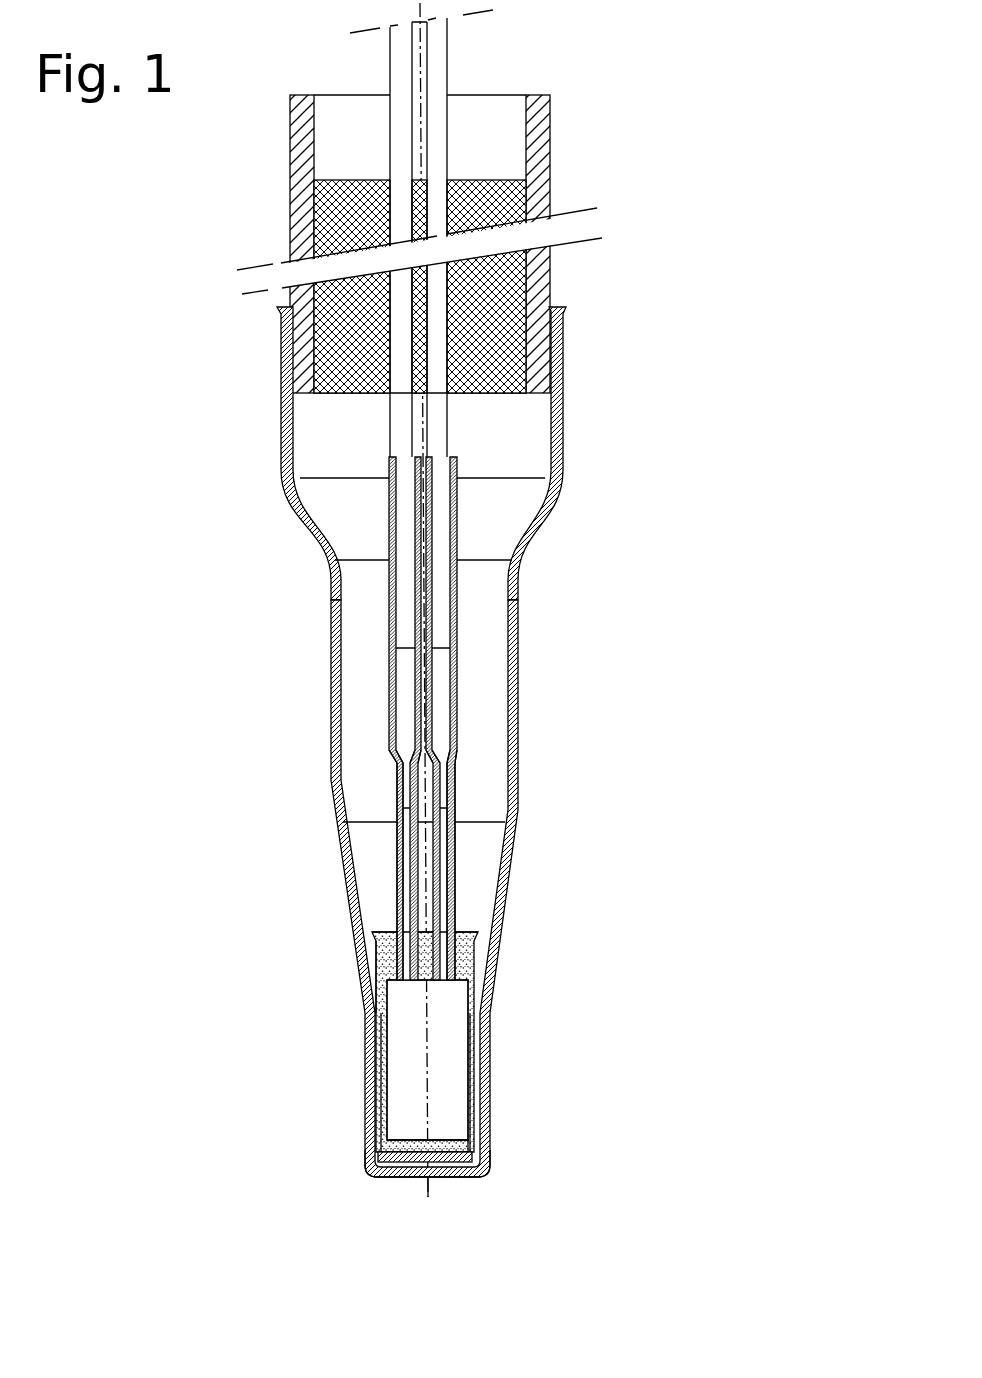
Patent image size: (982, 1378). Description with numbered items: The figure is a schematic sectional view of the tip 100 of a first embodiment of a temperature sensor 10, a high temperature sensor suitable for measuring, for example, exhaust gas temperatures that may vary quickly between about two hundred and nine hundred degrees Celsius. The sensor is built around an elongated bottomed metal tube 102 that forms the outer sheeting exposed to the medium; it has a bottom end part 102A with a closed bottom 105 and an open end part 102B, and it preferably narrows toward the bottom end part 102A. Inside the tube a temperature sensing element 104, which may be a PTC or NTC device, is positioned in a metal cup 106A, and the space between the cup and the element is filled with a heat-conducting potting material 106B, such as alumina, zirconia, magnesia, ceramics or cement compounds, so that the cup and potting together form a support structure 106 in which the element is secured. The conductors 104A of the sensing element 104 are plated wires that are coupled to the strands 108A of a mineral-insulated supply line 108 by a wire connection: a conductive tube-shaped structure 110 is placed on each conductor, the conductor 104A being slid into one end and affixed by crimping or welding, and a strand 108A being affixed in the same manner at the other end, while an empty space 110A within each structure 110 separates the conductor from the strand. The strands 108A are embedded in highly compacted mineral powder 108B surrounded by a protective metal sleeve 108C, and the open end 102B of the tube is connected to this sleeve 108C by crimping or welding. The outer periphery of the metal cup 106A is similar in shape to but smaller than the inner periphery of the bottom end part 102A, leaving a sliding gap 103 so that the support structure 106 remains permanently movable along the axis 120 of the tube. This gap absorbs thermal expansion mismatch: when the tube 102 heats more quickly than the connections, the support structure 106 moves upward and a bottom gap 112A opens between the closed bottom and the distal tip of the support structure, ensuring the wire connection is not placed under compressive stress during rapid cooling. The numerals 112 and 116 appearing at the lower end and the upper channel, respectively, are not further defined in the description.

The temperature sensor 10 is at (440, 233).
The tip 100 is at (376, 782).
The bottomed metal tube 102 is at (333, 707).
The bottom end part 102A is at (366, 1100).
The open end part 102B is at (563, 437).
The sliding gap 103 is at (468, 1120).
The temperature sensing element 104 is at (455, 1063).
The conductors 104A is at (400, 848).
The closed bottom 105 is at (443, 1173).
The support structure 106 is at (423, 1021).
The metal cup 106A is at (378, 958).
The potting material 106B is at (388, 948).
The mineral-insulated supply line 108 is at (440, 244).
The strands 108A is at (435, 80).
The mineral powder 108B is at (503, 203).
The protective metal sleeve 108C is at (303, 178).
The conductive tube-shaped structure 110 is at (389, 673).
The empty space 110A is at (445, 750).
The lower corner 112 is at (383, 1158).
The bottom gap 112A is at (450, 1160).
The central conduit 116 is at (412, 88).
The axis 120 is at (428, 1185).